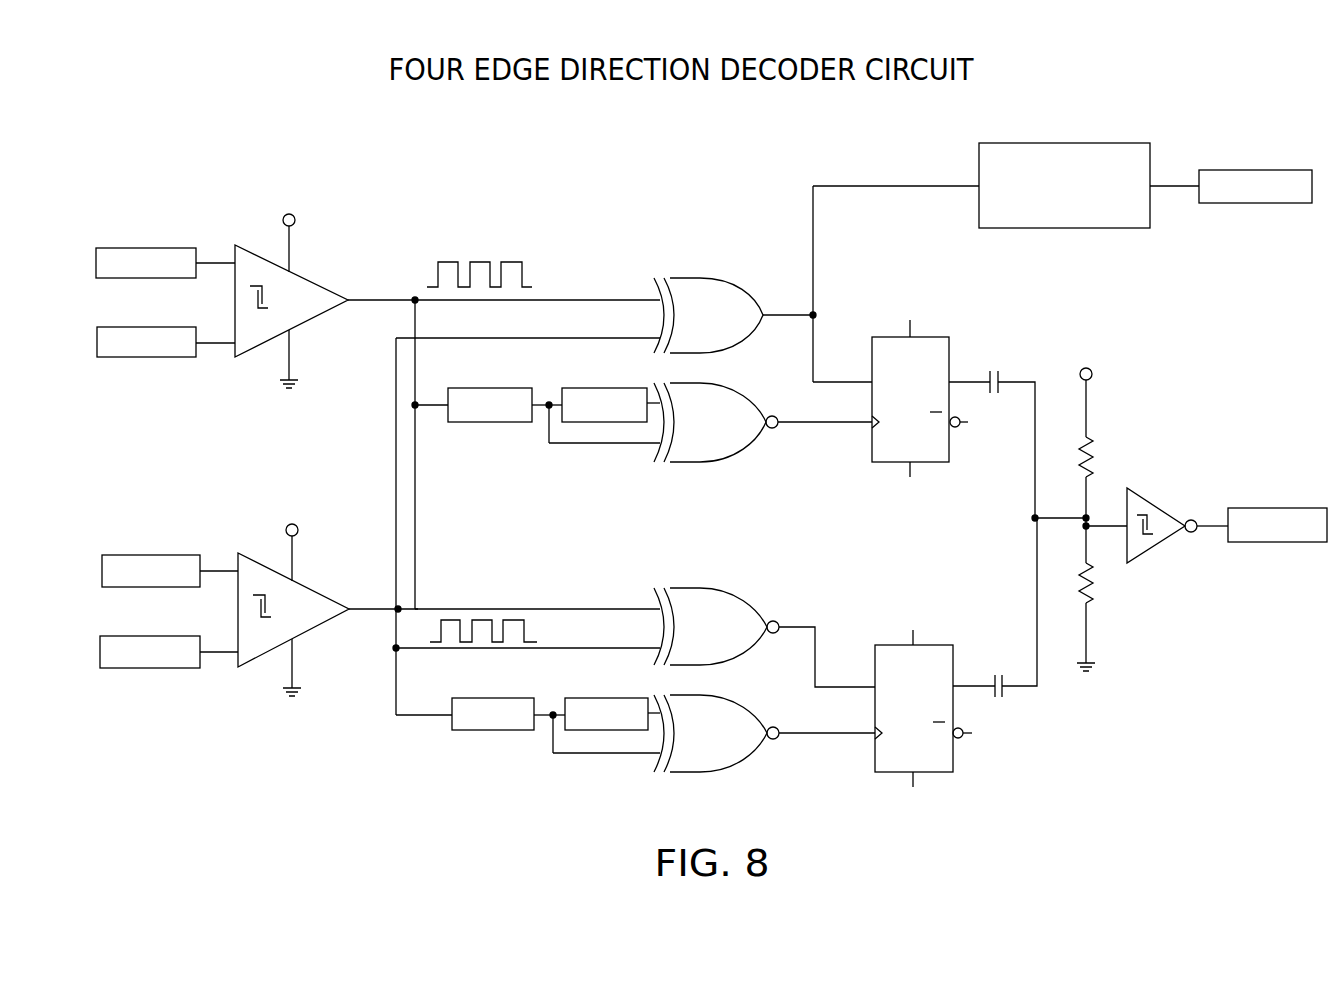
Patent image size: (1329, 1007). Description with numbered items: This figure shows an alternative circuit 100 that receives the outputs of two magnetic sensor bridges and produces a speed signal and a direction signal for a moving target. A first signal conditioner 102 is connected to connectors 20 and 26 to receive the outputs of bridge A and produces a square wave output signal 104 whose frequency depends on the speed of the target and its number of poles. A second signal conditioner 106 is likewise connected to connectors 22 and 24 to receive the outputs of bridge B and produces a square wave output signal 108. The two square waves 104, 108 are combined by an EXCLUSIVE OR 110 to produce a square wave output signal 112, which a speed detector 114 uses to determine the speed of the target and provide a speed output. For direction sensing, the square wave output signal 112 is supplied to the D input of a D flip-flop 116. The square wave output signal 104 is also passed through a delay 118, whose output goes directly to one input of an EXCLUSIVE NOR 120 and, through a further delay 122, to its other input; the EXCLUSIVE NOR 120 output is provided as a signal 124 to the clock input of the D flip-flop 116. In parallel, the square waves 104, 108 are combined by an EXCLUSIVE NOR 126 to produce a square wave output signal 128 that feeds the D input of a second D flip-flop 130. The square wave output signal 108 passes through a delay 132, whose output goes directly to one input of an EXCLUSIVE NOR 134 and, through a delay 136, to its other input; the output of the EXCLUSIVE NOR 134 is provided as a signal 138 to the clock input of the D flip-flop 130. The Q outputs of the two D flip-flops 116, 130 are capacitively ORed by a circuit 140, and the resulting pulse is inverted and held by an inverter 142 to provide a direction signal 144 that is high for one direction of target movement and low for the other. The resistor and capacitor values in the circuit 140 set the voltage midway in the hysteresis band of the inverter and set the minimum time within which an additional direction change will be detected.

The alternative circuit 100 is at (1026, 118).
The first signal conditioner 102 is at (336, 222).
The square wave output signal 104 is at (488, 262).
The second signal conditioner 106 is at (340, 532).
The square wave output signal 108 is at (528, 627).
The EXCLUSIVE OR 110 is at (688, 278).
The square wave output signal 112 is at (830, 300).
The speed detector 114 is at (1125, 143).
The D flip-flop 116 is at (888, 337).
The delay 118 is at (492, 388).
The EXCLUSIVE NOR 120 is at (700, 462).
The delay 122 is at (585, 388).
The signal 124 is at (828, 425).
The EXCLUSIVE NOR 126 is at (692, 588).
The square wave output signal 128 is at (815, 625).
The D flip-flop 130 is at (886, 645).
The delay 132 is at (494, 698).
The EXCLUSIVE NOR 134 is at (705, 772).
The delay 136 is at (587, 698).
The signal 138 is at (830, 740).
The circuit 140 is at (1113, 440).
The inverter 142 is at (1147, 495).
The direction signal 144 is at (1210, 527).
The connector 20 is at (160, 357).
The connector 22 is at (165, 668).
The connector 24 is at (157, 555).
The connector 26 is at (155, 248).